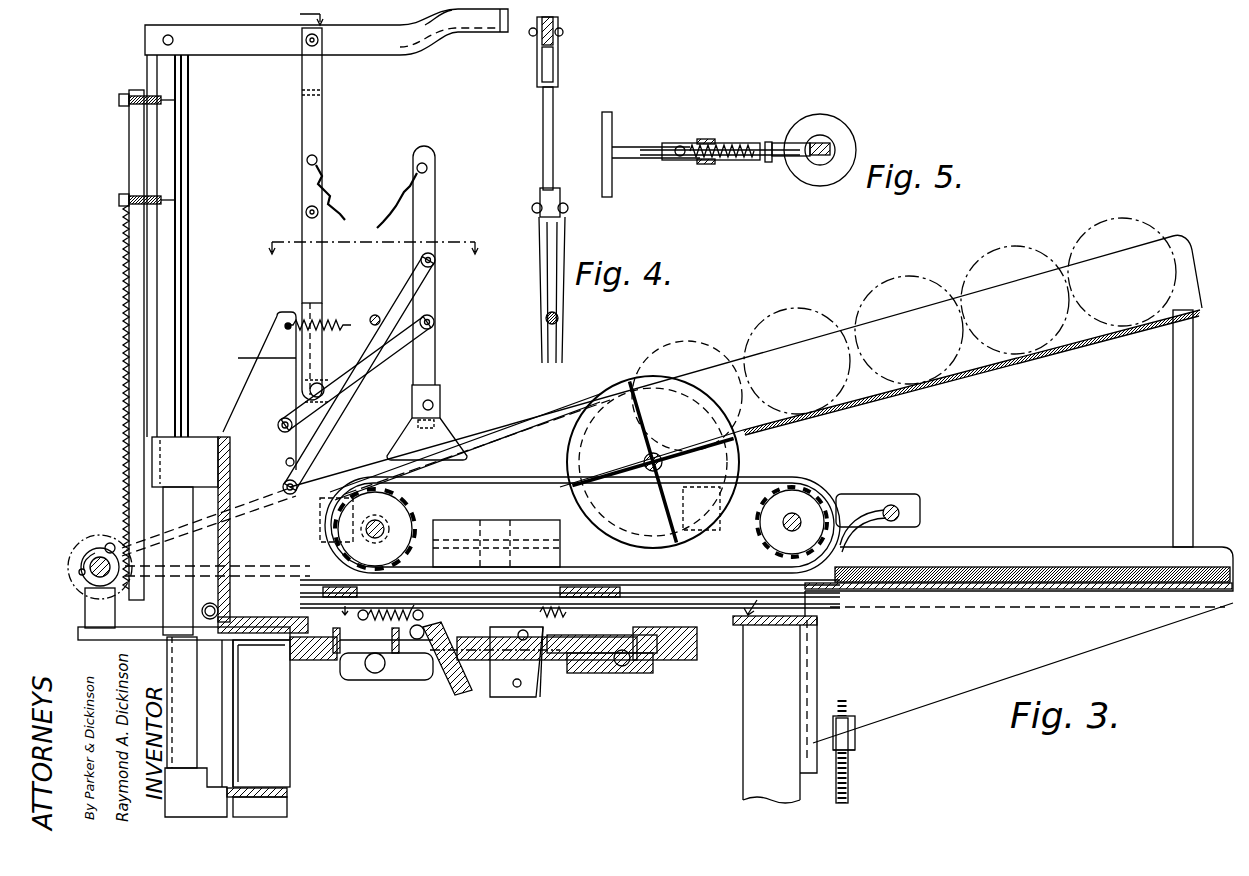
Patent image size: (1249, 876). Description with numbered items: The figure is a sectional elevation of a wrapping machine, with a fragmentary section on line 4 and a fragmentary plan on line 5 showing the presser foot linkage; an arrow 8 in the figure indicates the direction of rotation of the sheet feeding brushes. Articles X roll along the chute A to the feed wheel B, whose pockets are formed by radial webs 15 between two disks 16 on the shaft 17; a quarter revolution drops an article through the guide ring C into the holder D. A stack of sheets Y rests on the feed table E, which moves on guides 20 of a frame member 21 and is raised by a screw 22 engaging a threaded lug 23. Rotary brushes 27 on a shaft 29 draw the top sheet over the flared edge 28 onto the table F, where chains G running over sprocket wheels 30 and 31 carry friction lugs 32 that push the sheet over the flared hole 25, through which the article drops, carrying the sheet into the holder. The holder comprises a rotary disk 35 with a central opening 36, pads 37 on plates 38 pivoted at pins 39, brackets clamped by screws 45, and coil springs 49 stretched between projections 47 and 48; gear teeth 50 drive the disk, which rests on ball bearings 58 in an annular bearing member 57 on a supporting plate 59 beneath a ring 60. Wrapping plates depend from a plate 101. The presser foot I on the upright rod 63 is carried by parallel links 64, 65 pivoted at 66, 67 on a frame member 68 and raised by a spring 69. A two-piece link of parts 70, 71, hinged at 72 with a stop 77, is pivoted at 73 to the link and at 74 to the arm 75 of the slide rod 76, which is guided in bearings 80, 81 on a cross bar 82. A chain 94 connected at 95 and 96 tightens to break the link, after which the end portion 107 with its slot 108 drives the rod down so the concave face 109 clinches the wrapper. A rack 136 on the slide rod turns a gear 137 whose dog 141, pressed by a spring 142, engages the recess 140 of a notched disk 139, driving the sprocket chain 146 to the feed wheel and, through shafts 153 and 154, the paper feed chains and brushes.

In FIG. 3, the section line 4 is at (311, 14).
In FIG. 3, the section line 5 is at (369, 242).
In FIG. 3, the direction arrow 8 is at (548, 607).
In FIG. 3, the radial webs 15 is at (640, 385).
In FIG. 3, the disks 16 is at (597, 418).
In FIG. 3, the shaft 17 is at (644, 461).
In FIG. 3, the guides 20 is at (850, 792).
In FIG. 3, the frame member 21 is at (780, 710).
In FIG. 3, the screw 22 is at (851, 760).
In FIG. 3, the threaded lug 23 is at (856, 733).
In FIG. 3, the hole or opening 25 is at (556, 580).
In FIG. 3, the rotary wipers or brushes 27 is at (862, 510).
In FIG. 3, the flared edge 28 is at (778, 586).
In FIG. 3, the shaft 29 is at (895, 515).
In FIG. 3, the sprocket wheels 30 is at (792, 522).
In FIG. 3, the sprocket wheels 31 is at (367, 529).
In FIG. 3, the friction lugs or projections 32 is at (390, 468).
In FIG. 3, the rotary disk or ring 35 is at (600, 676).
In FIG. 3, the central hole or opening 36 is at (575, 673).
In FIG. 3, the pads or cushions 37 is at (530, 697).
In FIG. 3, the plates 38 is at (445, 660).
In FIG. 3, the pivots or pins 39 is at (415, 642).
In FIG. 3, the clamping screws 45 is at (374, 674).
In FIG. 3, the upwardly extending projection 47 is at (424, 617).
In FIG. 3, the upwardly extending part 48 is at (343, 663).
In FIG. 3, the coil springs 49 is at (367, 657).
In FIG. 3, the gear teeth 50 is at (626, 668).
In FIG. 3, the annular bearing member 57 is at (612, 676).
In FIG. 3, the ball bearings 58 is at (630, 700).
In FIG. 3, the supporting plate 59 is at (745, 638).
In FIG. 3, the ring 60 is at (300, 650).
In FIG. 3, the upright rod 63 is at (436, 206).
In FIG. 5, the upright rod 63 is at (825, 148).
In FIG. 3, the parallel link 64 is at (413, 293).
In FIG. 3, the parallel link 65 is at (413, 357).
In FIG. 3, the pivot 66 is at (279, 425).
In FIG. 3, the pivot 67 is at (283, 488).
In FIG. 3, the frame member 68 is at (267, 453).
In FIG. 5, the frame member 68 is at (628, 160).
In FIG. 3, the spring 69 is at (348, 320).
In FIG. 5, the spring 69 is at (750, 162).
In FIG. 3, the lower part of connecting link 70 is at (302, 281).
In FIG. 4, the lower part of connecting link 70 is at (548, 277).
In FIG. 5, the lower part of connecting link 70 is at (705, 139).
In FIG. 3, the upper part of connecting link 71 is at (302, 131).
In FIG. 4, the upper part of connecting link 71 is at (555, 102).
In FIG. 3, the hinge or pivot 72 is at (306, 210).
In FIG. 3, the pivot 73 is at (328, 397).
In FIG. 3, the pivot 74 is at (306, 44).
In FIG. 4, the pivot 74 is at (560, 29).
In FIG. 3, the reciprocatory arm 75 is at (357, 56).
In FIG. 3, the slide rod 76 is at (190, 122).
In FIG. 3, the stop 77 is at (332, 196).
In FIG. 4, the stop 77 is at (542, 196).
In FIG. 3, the bearing or lug 80 is at (201, 433).
In FIG. 3, the bearing or lug 81 is at (187, 785).
In FIG. 3, the cross bar 82 is at (290, 784).
In FIG. 3, the chain or flexible connection 94 is at (390, 214).
In FIG. 3, the connection point 95 is at (428, 166).
In FIG. 3, the connection point 96 is at (318, 157).
In FIG. 3, the plate 101 is at (682, 606).
In FIG. 3, the end portion of arm 107 is at (436, 46).
In FIG. 3, the slot 108 is at (500, 36).
In FIG. 3, the dished or concave lower face 109 is at (450, 458).
In FIG. 3, the rack 136 is at (128, 393).
In FIG. 3, the pinion or gear 137 is at (78, 572).
In FIG. 3, the notched disk 139 is at (92, 590).
In FIG. 3, the recess or notched portion 140 is at (72, 556).
In FIG. 3, the dog or detent 141 is at (108, 543).
In FIG. 3, the spring 142 is at (86, 546).
In FIG. 3, the sprocket chain 146 is at (548, 415).
In FIG. 3, the shaft 153 is at (382, 524).
In FIG. 3, the shaft 154 is at (800, 515).
In FIG. 3, the chute or feed trough A is at (746, 391).
In FIG. 3, the feed wheel B is at (610, 420).
In FIG. 3, the guide ring C is at (437, 527).
In FIG. 3, the holder or chuck D is at (470, 694).
In FIG. 3, the feed table E is at (1019, 645).
In FIG. 3, the sheet supporting plate or table F is at (784, 602).
In FIG. 3, the chains or belts G is at (768, 477).
In FIG. 3, the presser foot or positioning member I is at (442, 400).
In FIG. 5, the presser foot or positioning member I is at (825, 186).
In FIG. 3, the articles X is at (902, 290).
In FIG. 3, the sheets Y is at (1015, 565).